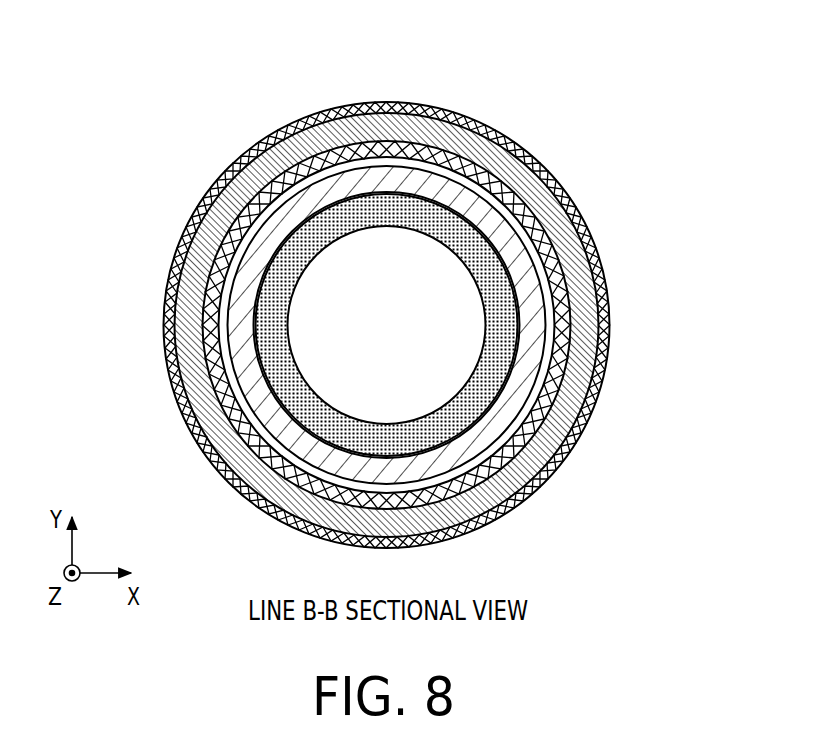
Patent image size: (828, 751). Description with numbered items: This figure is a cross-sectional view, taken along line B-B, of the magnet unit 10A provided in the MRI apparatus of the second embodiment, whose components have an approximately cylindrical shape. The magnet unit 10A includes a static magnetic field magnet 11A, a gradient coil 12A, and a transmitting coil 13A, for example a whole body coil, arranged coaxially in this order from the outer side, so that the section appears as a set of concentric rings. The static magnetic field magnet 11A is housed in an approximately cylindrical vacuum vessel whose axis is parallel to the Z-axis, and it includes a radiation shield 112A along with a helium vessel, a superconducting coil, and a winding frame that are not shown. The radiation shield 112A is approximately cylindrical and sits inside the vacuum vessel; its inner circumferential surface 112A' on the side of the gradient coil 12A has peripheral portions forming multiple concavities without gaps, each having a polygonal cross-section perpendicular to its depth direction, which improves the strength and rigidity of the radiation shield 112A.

The magnet unit 10A is at (322, 86).
The static magnetic field magnet 11A is at (566, 178).
The radiation shield 112A is at (434, 325).
The inner circumferential surface 112A' is at (449, 325).
The gradient coil 12A is at (528, 293).
The transmitting coil 13A is at (518, 320).